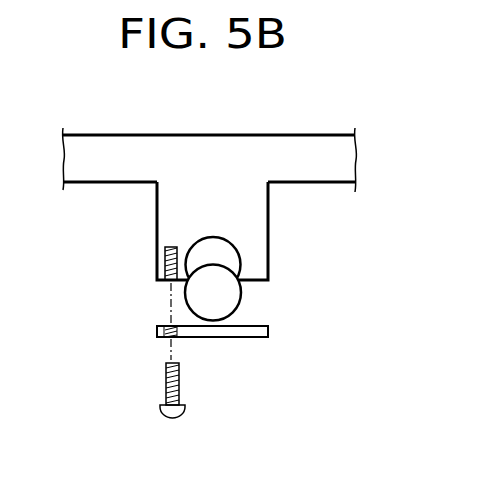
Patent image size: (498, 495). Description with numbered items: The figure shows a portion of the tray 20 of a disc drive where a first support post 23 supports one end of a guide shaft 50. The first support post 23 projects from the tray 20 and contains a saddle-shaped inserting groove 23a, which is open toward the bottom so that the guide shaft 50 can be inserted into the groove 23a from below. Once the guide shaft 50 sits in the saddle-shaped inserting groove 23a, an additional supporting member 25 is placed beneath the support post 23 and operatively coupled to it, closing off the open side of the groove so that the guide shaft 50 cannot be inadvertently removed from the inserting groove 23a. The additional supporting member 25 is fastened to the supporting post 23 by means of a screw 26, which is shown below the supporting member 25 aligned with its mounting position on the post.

The tray 20 is at (110, 170).
The first support post 23 is at (268, 213).
The saddle-shaped inserting groove 23a is at (223, 243).
The guide shaft 50 is at (237, 295).
The additional supporting member 25 is at (250, 339).
The screw 26 is at (172, 418).